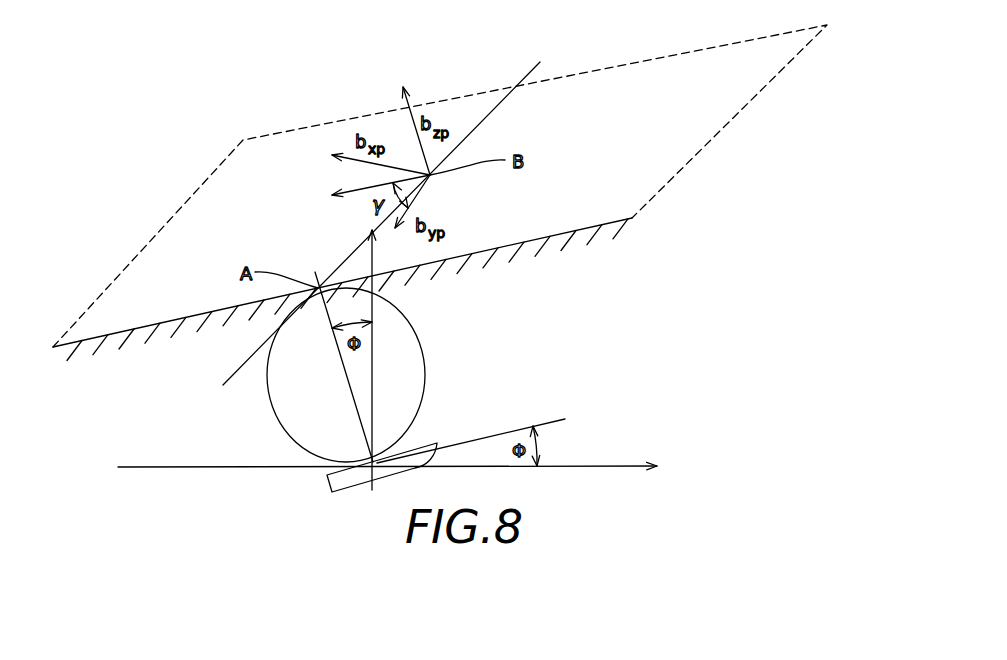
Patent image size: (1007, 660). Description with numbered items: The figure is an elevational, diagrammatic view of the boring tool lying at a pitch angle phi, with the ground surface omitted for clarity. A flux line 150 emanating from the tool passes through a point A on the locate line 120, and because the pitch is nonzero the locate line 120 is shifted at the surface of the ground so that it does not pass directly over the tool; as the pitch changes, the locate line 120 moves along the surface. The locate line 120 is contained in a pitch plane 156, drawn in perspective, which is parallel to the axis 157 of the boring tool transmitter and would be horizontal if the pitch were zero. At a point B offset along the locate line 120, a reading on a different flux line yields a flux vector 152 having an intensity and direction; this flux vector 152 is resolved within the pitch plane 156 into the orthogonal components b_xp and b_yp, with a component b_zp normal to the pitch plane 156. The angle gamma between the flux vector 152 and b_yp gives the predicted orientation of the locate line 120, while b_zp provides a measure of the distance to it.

The locate line 120 is at (527, 70).
The flux line 150 is at (278, 415).
The flux vector 152 is at (357, 190).
The pitch plane 156 is at (652, 62).
The axis of the boring tool transmitter 157 is at (553, 420).